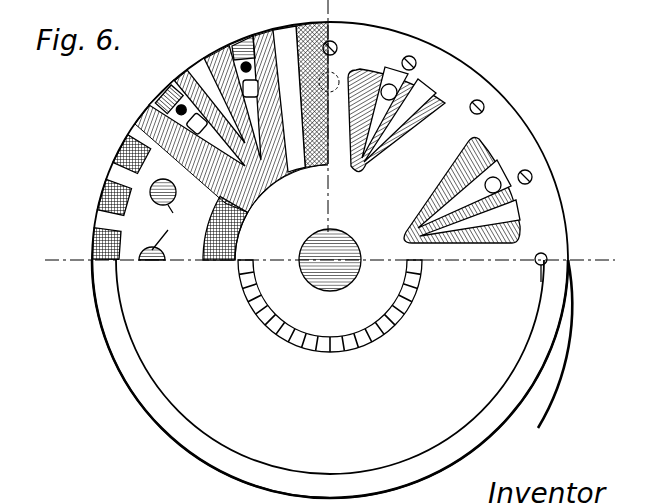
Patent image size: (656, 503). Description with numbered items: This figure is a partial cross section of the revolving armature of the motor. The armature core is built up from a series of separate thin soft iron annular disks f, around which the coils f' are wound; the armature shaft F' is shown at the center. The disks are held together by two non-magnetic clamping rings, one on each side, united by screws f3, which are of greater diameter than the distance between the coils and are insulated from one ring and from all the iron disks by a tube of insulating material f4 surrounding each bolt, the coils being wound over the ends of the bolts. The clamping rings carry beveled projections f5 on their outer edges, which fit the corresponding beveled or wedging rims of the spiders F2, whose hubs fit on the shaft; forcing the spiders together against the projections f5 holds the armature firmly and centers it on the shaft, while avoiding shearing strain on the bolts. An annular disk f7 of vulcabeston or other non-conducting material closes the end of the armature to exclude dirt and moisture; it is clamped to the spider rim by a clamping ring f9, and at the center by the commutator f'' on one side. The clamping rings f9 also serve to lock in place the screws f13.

The annular disks f is at (111, 175).
The coils f' is at (86, 239).
The screws f3 is at (176, 194).
The tube of insulating material f4 is at (173, 227).
The beveled projections f5 is at (163, 97).
The annular disk of non-conducting material f7 is at (330, 367).
The clamping rings f9 is at (564, 333).
The commutator f'' is at (305, 306).
The screws f13 is at (489, 106).
The shaft F' is at (313, 251).
The spiders F2 is at (484, 128).